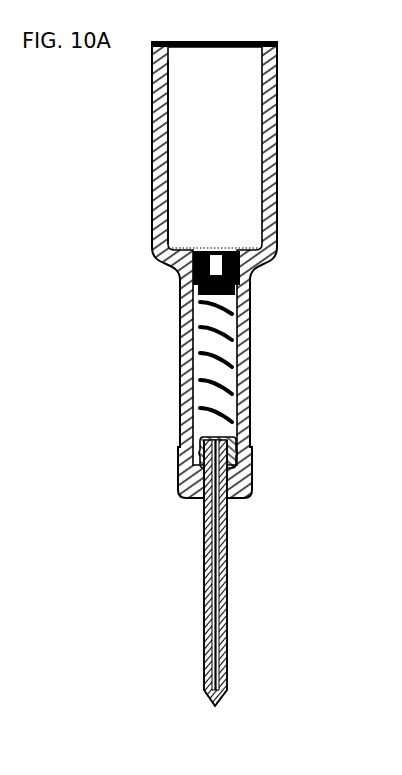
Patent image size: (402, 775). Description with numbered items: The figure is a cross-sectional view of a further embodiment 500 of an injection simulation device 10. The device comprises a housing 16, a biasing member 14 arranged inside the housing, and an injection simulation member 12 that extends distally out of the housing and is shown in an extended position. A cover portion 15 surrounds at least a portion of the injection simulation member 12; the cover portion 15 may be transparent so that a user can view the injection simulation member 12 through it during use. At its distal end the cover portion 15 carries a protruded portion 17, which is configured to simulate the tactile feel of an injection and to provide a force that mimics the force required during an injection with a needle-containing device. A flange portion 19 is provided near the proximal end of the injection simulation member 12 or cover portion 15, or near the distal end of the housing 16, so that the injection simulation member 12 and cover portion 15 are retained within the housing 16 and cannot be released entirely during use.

The further embodiment 500 is at (122, 114).
The injection simulation device 10 is at (268, 128).
The housing 16 is at (160, 203).
The biasing member 14 is at (228, 362).
The flange portion 19 is at (232, 467).
The cover portion 15 is at (227, 552).
The injection simulation member 12 is at (258, 573).
The protruded portion 17 is at (218, 707).